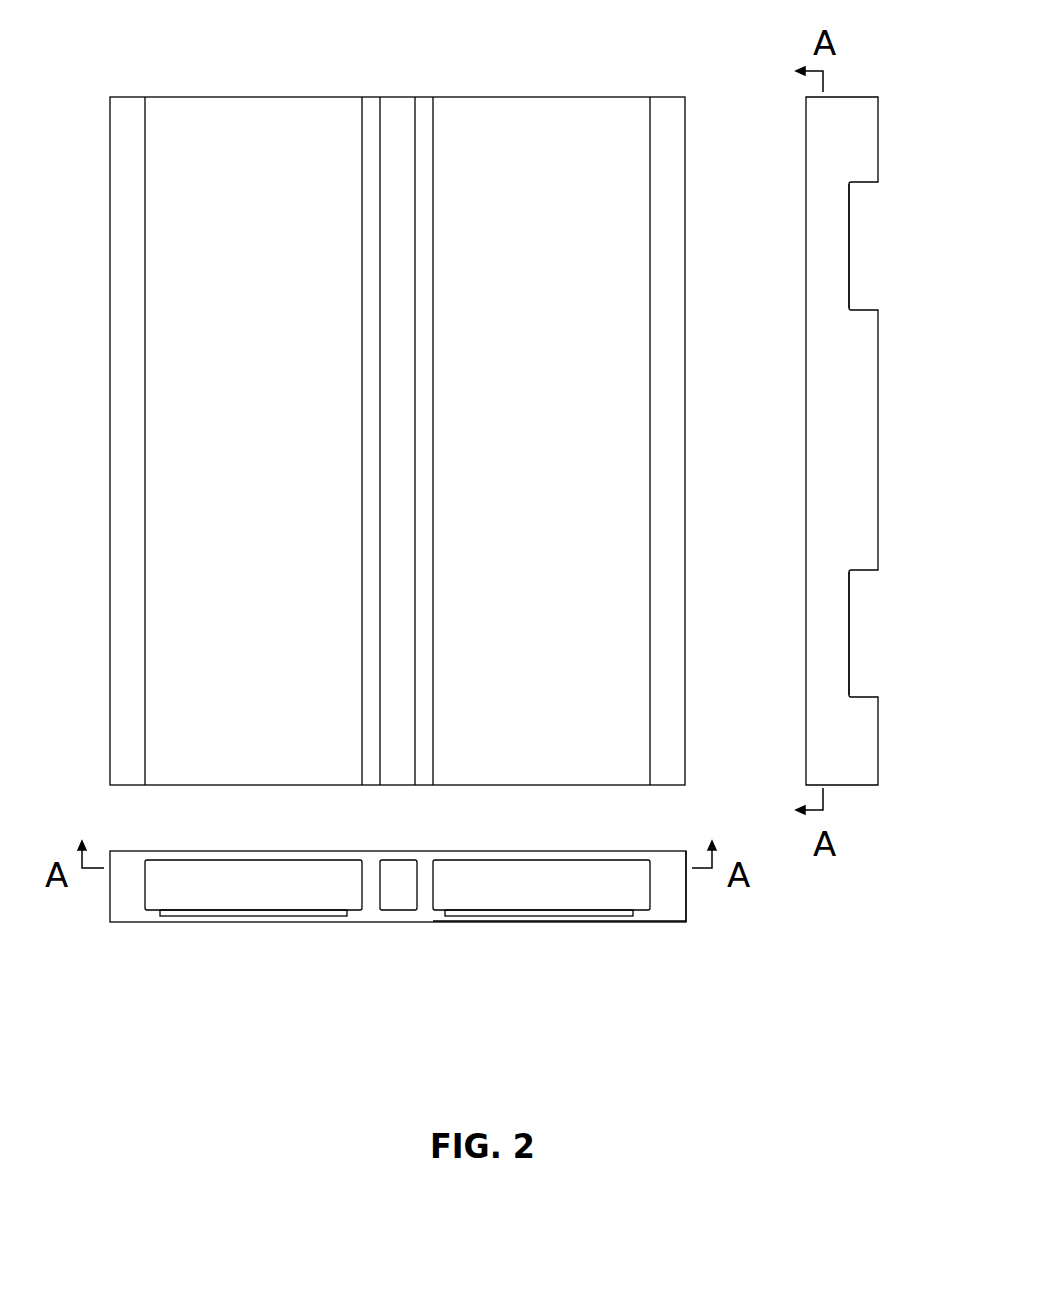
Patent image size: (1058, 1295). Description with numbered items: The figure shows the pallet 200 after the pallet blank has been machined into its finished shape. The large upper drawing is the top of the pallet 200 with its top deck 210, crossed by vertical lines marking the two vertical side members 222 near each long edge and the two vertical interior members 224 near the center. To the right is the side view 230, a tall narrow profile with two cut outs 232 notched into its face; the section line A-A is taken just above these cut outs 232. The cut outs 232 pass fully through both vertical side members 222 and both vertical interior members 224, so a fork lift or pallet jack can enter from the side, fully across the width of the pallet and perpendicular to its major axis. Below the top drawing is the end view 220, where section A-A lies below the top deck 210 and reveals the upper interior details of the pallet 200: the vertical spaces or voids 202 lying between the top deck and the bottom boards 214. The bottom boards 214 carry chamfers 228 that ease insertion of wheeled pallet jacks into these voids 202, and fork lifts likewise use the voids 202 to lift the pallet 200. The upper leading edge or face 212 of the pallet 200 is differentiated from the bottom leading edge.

The pallet 200 is at (778, 892).
The vertical spaces or voids 202 is at (397, 885).
The top deck 210 is at (397, 412).
The upper leading edge or face 212 is at (556, 476).
The bottom boards 214 is at (559, 943).
The end view 220 is at (398, 915).
The vertical side members 222 is at (175, 482).
The vertical interior members 224 is at (350, 483).
The chamfers 228 is at (540, 912).
The side view 230 is at (884, 437).
The cut outs 232 is at (888, 439).